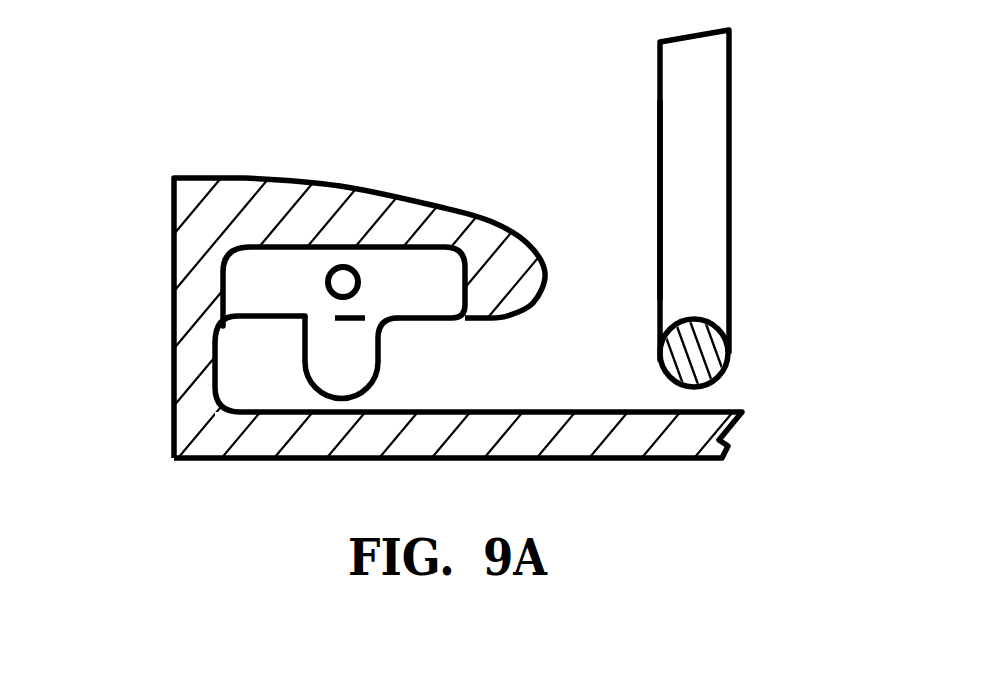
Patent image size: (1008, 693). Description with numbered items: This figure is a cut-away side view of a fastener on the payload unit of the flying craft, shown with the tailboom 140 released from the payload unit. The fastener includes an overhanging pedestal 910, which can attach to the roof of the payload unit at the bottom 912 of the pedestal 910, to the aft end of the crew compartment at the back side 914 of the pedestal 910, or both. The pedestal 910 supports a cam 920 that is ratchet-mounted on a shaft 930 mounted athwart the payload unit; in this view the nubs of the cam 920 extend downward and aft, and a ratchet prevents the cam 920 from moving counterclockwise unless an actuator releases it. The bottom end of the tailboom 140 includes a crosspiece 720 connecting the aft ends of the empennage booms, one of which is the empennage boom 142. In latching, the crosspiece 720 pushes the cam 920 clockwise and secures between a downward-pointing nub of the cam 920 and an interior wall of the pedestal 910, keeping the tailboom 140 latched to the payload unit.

The pedestal 910 is at (322, 125).
The back side 914 is at (172, 284).
The bottom 912 is at (678, 460).
The cam 920 is at (385, 345).
The shaft 930 is at (362, 280).
The tailboom 140 is at (768, 70).
The empennage boom 142 is at (735, 145).
The crosspiece 720 is at (731, 351).